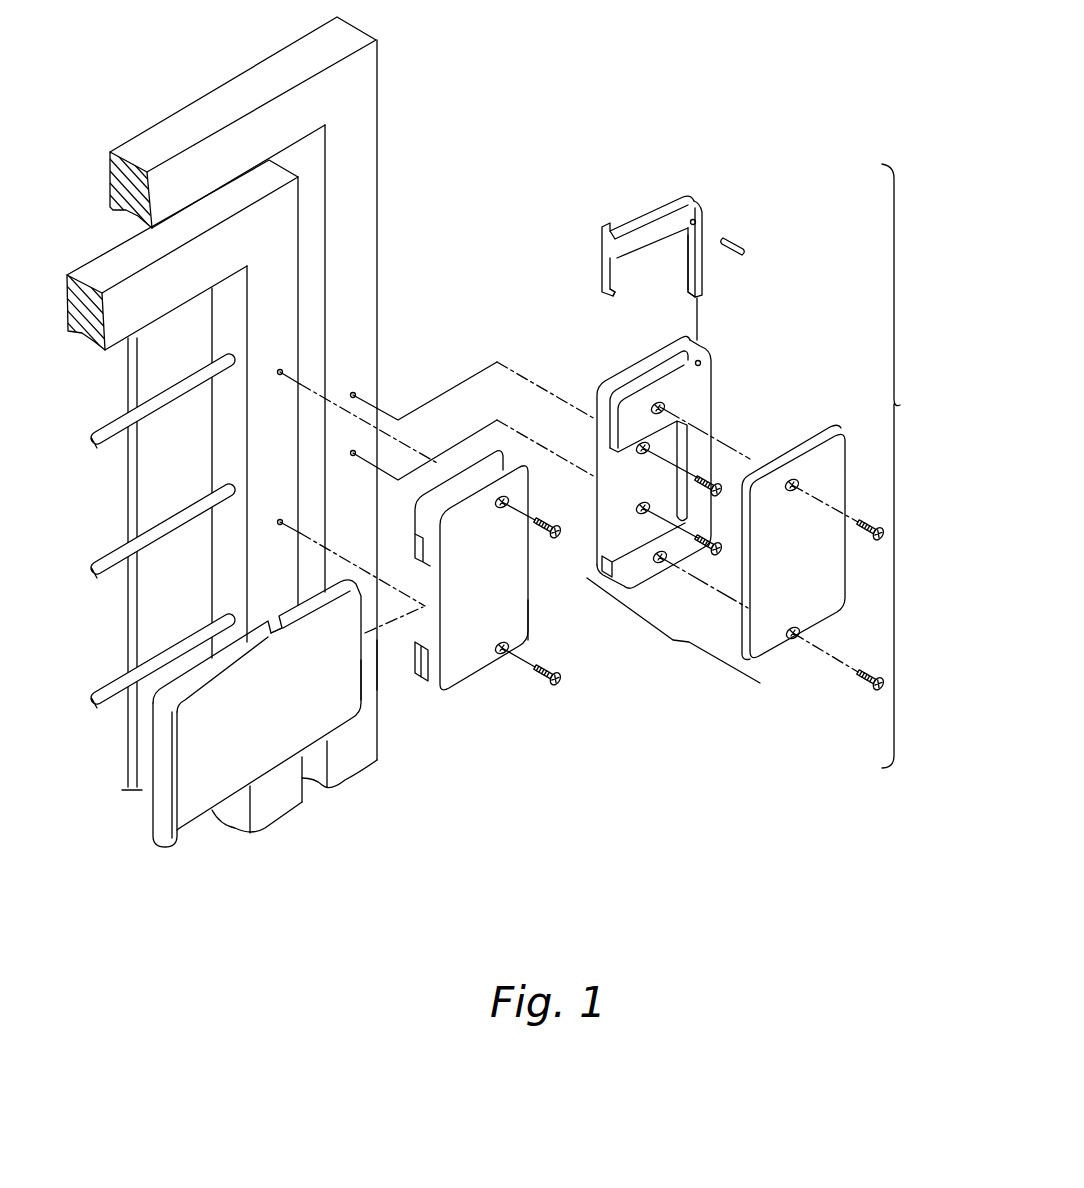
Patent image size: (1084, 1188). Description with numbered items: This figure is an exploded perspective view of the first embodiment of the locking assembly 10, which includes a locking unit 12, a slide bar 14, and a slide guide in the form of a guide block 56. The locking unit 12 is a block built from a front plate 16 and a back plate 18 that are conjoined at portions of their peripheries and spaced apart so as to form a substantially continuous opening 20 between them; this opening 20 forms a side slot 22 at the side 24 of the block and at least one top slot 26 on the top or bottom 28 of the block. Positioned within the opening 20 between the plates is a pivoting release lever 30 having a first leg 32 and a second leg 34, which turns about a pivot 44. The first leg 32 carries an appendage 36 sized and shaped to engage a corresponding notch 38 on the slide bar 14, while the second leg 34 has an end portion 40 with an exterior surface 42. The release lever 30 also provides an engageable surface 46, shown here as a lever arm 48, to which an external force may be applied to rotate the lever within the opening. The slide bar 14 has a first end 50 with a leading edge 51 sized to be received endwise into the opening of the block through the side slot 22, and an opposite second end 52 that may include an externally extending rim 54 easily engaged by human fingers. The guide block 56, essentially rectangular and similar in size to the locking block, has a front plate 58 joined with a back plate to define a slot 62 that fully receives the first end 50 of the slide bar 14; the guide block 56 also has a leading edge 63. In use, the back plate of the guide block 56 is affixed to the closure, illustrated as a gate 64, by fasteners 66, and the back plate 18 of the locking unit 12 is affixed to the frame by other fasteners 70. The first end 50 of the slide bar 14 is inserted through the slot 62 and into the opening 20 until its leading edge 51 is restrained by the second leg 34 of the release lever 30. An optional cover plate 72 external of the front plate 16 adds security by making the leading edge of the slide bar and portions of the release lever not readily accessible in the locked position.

The locking assembly 10 is at (900, 405).
The locking unit 12 is at (666, 493).
The slide bar 14 is at (258, 765).
The front plate 16 is at (700, 392).
The back plate 18 is at (648, 475).
The opening 20 is at (613, 530).
The side slot 22 is at (610, 467).
The side 24 is at (597, 513).
The top slot 26 is at (682, 340).
The top or bottom 28 is at (628, 358).
The pivoting release lever 30 is at (658, 240).
The first leg 32 is at (602, 270).
The second leg 34 is at (707, 265).
The appendage 36 is at (615, 293).
The notch 38 is at (280, 637).
The end portion 40 is at (705, 292).
The exterior surface 42 is at (687, 273).
The pivot 44 is at (733, 247).
The engageable surface 46 is at (657, 250).
The lever arm 48 is at (367, 250).
The first end 50 is at (380, 672).
The leading edge 51 is at (362, 690).
The second end 52 is at (249, 752).
The externally extending rim 54 is at (162, 838).
The guide block 56 is at (467, 513).
The front plate 58 is at (515, 570).
The slot 62 is at (423, 690).
The leading edge 63 is at (533, 622).
The gate 64 is at (273, 213).
The fasteners 66 is at (543, 537).
The fasteners 70 is at (718, 493).
The cover plate 72 is at (827, 573).